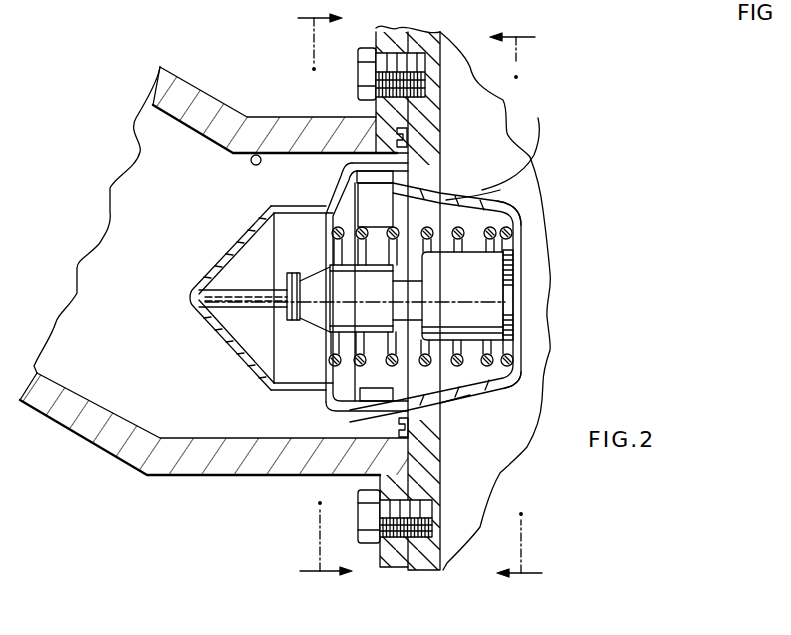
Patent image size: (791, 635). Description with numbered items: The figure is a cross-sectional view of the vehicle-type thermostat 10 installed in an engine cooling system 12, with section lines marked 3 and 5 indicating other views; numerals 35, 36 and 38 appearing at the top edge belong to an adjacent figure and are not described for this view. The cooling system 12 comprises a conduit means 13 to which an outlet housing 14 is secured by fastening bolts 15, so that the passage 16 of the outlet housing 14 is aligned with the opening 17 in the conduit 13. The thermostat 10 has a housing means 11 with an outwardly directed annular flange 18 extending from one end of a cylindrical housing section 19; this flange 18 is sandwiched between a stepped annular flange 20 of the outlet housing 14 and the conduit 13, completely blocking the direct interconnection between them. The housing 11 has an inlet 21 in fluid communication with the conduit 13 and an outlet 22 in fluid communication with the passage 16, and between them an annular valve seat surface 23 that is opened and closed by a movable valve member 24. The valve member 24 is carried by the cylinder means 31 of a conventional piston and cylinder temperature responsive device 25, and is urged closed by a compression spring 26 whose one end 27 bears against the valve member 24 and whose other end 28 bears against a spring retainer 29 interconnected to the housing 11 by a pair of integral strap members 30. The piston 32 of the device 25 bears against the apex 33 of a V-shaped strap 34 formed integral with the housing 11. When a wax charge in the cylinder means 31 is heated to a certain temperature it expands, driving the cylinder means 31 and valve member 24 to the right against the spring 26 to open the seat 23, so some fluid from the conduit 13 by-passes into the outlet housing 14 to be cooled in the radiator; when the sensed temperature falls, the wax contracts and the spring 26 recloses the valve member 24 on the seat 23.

The section line 3- 3 is at (316, 296).
The section line 5- 5 is at (525, 306).
The thermostat 10 is at (514, 209).
The housing means 11 is at (386, 162).
The engine cooling system 12 is at (606, 218).
The conduit means 13 is at (442, 138).
The outlet housing 14 is at (193, 97).
The fastening bolts 15 is at (413, 60).
The passage 16 is at (254, 156).
The opening 17 is at (446, 166).
The annular flange 18 is at (452, 93).
The cylindrical housing section 19 is at (382, 165).
The stepped annular flange 20 is at (395, 463).
The inlet 21 is at (446, 190).
The outlet 22 is at (294, 246).
The annular valve seat surface 23 is at (352, 402).
The movable valve member 24 is at (382, 213).
The piston and cylinder temperature responsive device 25 is at (489, 297).
The compression spring 26 is at (452, 398).
The one end 27 is at (343, 228).
The other end 28 is at (514, 360).
The spring retainer 29 is at (514, 382).
The integral strap members 30 is at (494, 199).
The cylinder means 31 is at (310, 384).
The piston 32 is at (242, 303).
The apex 33 is at (190, 298).
The V-shaped strap 34 is at (213, 262).
The element 35 (FIG. 1) 35 is at (646, 0).
The element 36 (FIG. 1) 36 is at (680, 3).
The element 38 (FIG. 1) 38 is at (596, 2).